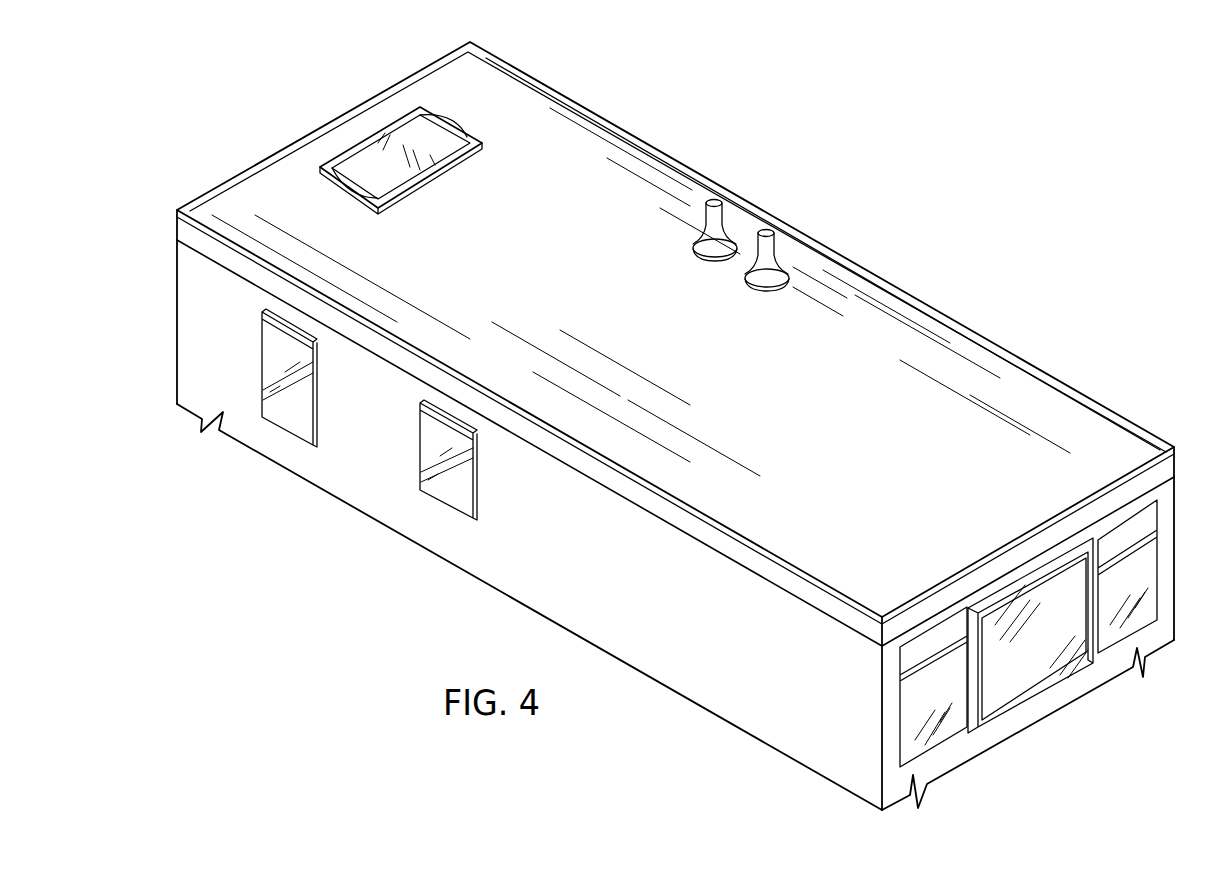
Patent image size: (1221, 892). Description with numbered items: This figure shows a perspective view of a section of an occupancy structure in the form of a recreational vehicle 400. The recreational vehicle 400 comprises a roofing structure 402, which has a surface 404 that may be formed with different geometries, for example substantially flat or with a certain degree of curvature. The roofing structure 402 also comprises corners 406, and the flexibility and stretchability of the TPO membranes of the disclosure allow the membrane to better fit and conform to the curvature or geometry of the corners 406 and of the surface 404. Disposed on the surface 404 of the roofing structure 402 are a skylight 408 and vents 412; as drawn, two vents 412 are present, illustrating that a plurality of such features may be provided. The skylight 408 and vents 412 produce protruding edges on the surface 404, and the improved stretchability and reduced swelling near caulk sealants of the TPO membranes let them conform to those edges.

The recreational vehicle 400 is at (932, 137).
The roofing structure 402 is at (1002, 393).
The surface 404 is at (1053, 400).
The corner 406 is at (1132, 443).
The skylight 408 is at (443, 148).
The vent 412 is at (713, 200).